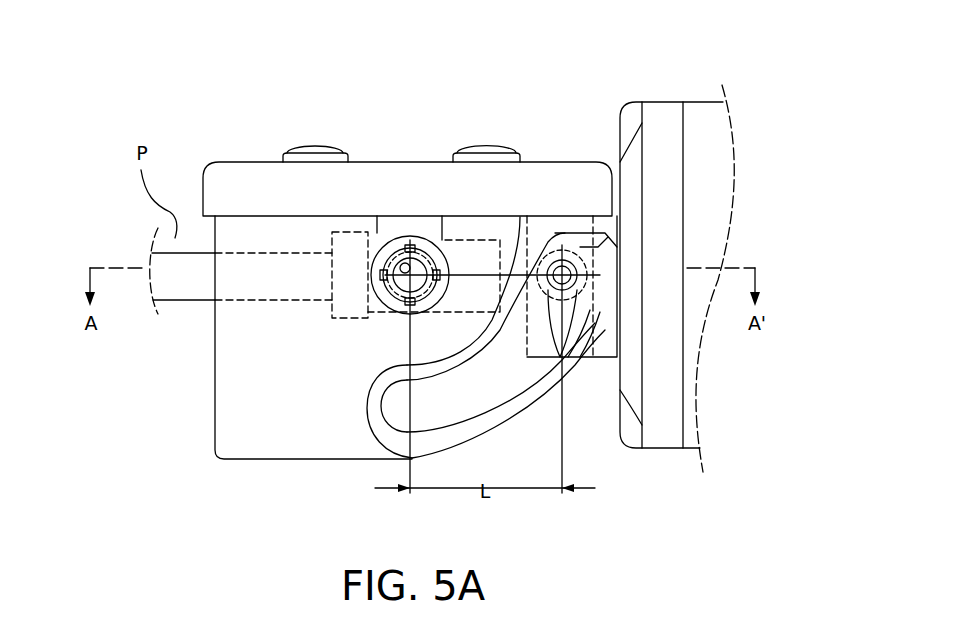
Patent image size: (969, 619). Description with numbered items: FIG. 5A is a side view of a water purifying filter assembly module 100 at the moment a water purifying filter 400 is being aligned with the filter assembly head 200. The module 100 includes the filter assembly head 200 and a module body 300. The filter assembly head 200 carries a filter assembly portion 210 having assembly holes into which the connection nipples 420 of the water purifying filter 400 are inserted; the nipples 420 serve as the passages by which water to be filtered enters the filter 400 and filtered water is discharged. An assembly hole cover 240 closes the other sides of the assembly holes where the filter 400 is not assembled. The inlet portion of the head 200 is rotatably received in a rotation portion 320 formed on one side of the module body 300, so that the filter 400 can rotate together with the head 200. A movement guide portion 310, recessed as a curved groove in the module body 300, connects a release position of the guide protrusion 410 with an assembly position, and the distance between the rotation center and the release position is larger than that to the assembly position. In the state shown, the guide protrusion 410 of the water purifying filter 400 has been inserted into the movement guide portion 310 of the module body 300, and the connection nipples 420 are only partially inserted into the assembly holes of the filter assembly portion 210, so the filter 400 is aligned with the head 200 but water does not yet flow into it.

The water purifying filter assembly module 100 is at (119, 75).
The filter assembly head 200 is at (336, 352).
The filter assembly portion 210 is at (473, 226).
The assembly hole cover 240 is at (351, 220).
The module body 300 is at (238, 132).
The movement guide portion 310 is at (385, 428).
The rotation portion 320 is at (404, 220).
The water purifying filter 400 is at (655, 94).
The guide protrusion 410 is at (563, 358).
The connection nipple 420 is at (561, 248).